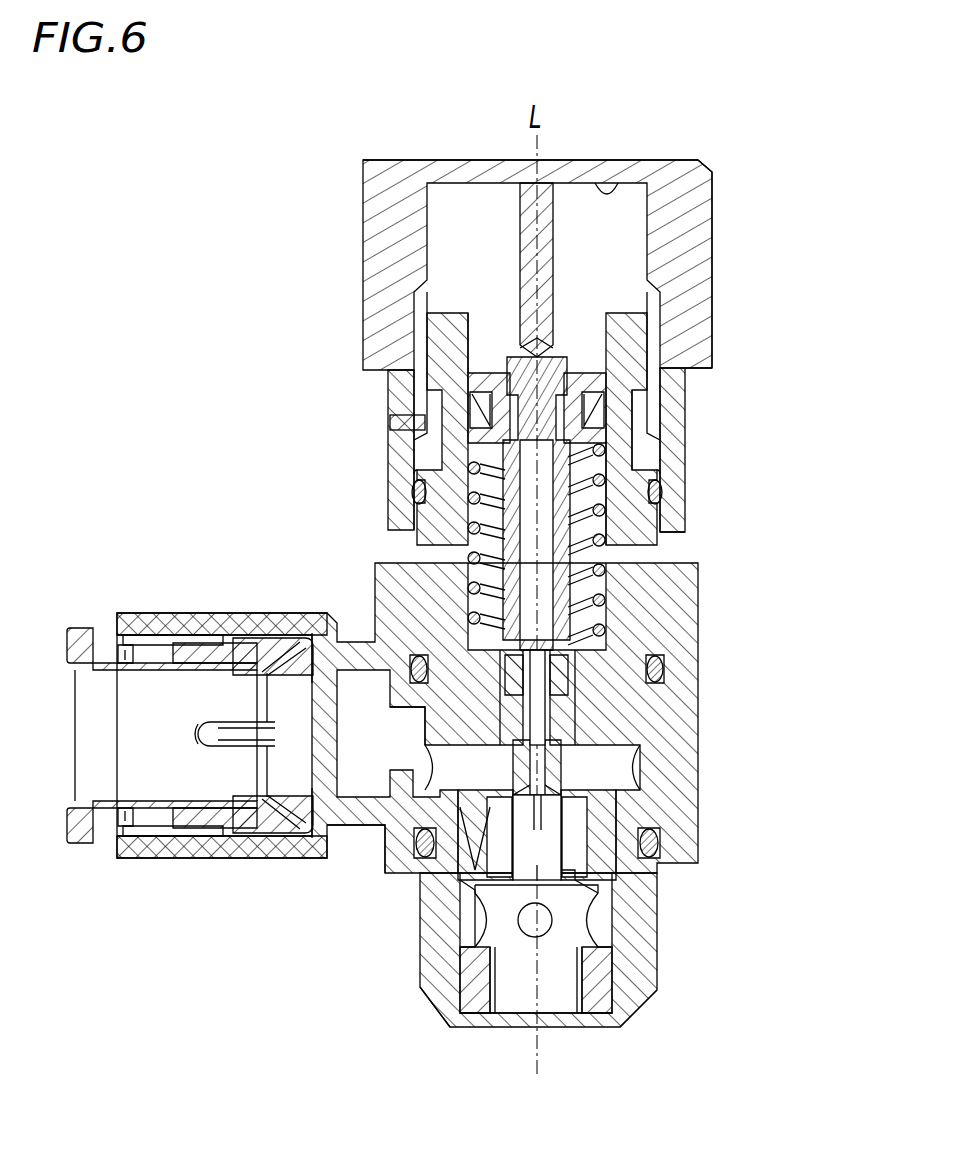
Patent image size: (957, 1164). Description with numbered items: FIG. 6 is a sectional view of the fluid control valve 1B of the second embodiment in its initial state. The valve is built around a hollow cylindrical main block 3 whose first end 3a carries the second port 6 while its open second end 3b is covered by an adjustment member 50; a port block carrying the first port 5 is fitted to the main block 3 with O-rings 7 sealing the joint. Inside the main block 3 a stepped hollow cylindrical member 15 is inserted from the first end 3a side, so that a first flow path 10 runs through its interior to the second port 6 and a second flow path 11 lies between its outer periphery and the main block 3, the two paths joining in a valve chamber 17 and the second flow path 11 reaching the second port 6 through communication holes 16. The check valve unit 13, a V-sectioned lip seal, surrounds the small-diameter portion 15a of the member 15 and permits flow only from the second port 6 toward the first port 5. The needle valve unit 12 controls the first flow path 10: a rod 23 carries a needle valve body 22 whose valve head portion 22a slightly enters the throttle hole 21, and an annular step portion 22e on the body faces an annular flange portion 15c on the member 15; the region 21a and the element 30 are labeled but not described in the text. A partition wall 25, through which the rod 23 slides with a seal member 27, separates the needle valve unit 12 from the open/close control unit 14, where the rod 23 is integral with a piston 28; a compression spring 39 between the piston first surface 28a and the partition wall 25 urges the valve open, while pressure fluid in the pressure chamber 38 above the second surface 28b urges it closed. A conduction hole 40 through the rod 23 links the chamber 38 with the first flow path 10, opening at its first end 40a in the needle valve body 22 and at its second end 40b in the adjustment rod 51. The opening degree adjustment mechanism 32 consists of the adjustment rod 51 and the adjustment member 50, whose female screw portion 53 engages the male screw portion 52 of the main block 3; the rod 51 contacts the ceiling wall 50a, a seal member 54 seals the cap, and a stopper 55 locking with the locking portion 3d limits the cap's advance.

The fluid control valve 1B is at (764, 58).
The main block 3 is at (650, 577).
The first end 3a is at (625, 1002).
The second end 3b is at (622, 360).
The locking portion 3d is at (430, 440).
The first port 5 is at (105, 738).
The second port 6 is at (572, 1000).
The O-rings 7 is at (665, 668).
The first flow path 10 is at (512, 1000).
The second flow path 11 is at (465, 953).
The needle valve unit 12 is at (585, 771).
The check valve unit 13 is at (478, 925).
The open/close control unit 14 is at (740, 243).
The hollow cylindrical member 15 is at (598, 975).
The small-diameter portion 15a is at (580, 913).
The annular flange portion 15c is at (400, 862).
The communication holes 16 is at (445, 995).
The valve chamber 17 is at (488, 773).
The throttle hole 21 is at (550, 854).
The needle valve tip 21a is at (480, 884).
The needle valve body 22 is at (655, 793).
The valve head portion 22a is at (650, 835).
The annular step portion 22e is at (445, 770).
The rod 23 is at (605, 462).
The partition wall 25 is at (600, 716).
The seal member 27 is at (557, 672).
The piston 28 is at (455, 392).
The first surface 28a is at (445, 470).
The second surface 28b is at (485, 380).
The sleeve 30 is at (605, 413).
The opening degree adjustment mechanism 32 is at (593, 133).
The pressure chamber 38 is at (480, 330).
The compression spring 39 is at (475, 553).
The conduction hole 40 is at (650, 330).
The first end 40a is at (563, 862).
The second end 40b is at (520, 340).
The adjustment member 50 is at (690, 187).
The ceiling wall 50a is at (607, 193).
The adjustment rod 51 is at (520, 215).
The male screw portion 52 is at (650, 372).
The female screw portion 53 is at (655, 290).
The seal member 54 is at (420, 497).
The stopper 55 is at (405, 420).